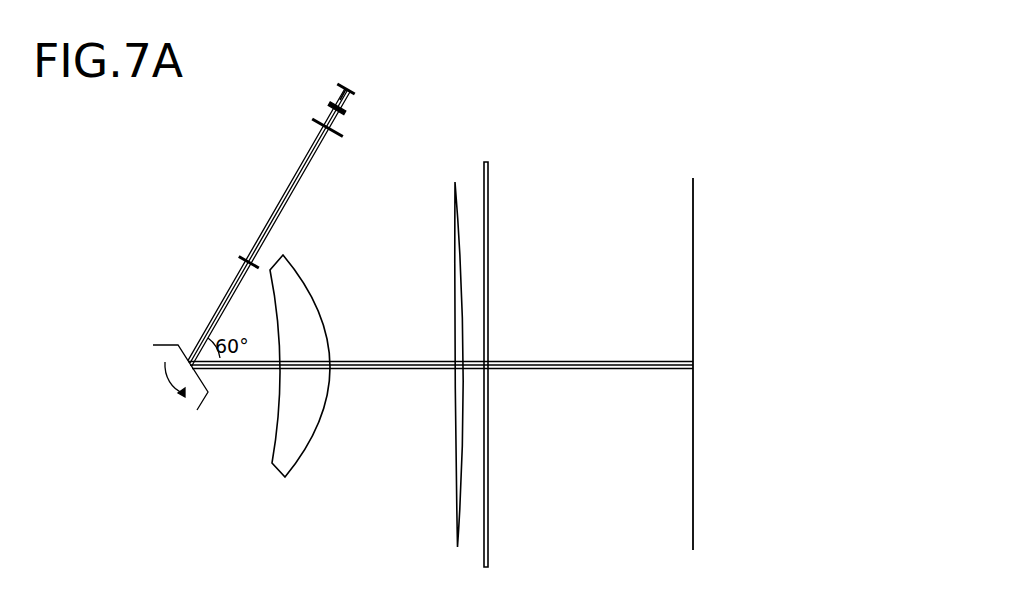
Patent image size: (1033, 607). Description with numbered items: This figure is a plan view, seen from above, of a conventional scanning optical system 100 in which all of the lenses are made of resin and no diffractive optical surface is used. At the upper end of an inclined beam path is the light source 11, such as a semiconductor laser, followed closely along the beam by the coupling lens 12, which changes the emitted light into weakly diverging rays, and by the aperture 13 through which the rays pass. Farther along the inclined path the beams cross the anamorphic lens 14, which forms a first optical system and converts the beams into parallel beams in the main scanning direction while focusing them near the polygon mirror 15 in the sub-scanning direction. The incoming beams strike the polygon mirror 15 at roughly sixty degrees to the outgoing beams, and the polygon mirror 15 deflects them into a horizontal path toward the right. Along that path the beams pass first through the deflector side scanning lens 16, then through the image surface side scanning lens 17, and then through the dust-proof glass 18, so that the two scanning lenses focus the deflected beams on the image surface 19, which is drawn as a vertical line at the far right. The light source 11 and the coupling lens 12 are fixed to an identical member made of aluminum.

The scanning optical system 100 is at (540, 48).
The light source 11 is at (345, 88).
The coupling lens 12 is at (330, 106).
The aperture 13 is at (315, 122).
The anamorphic lens 14 is at (240, 257).
The polygon mirror 15 is at (170, 344).
The deflector side scanning lens 16 is at (302, 270).
The image surface side scanning lens 17 is at (456, 182).
The dust-proof glass 18 is at (485, 162).
The image surface 19 is at (694, 178).